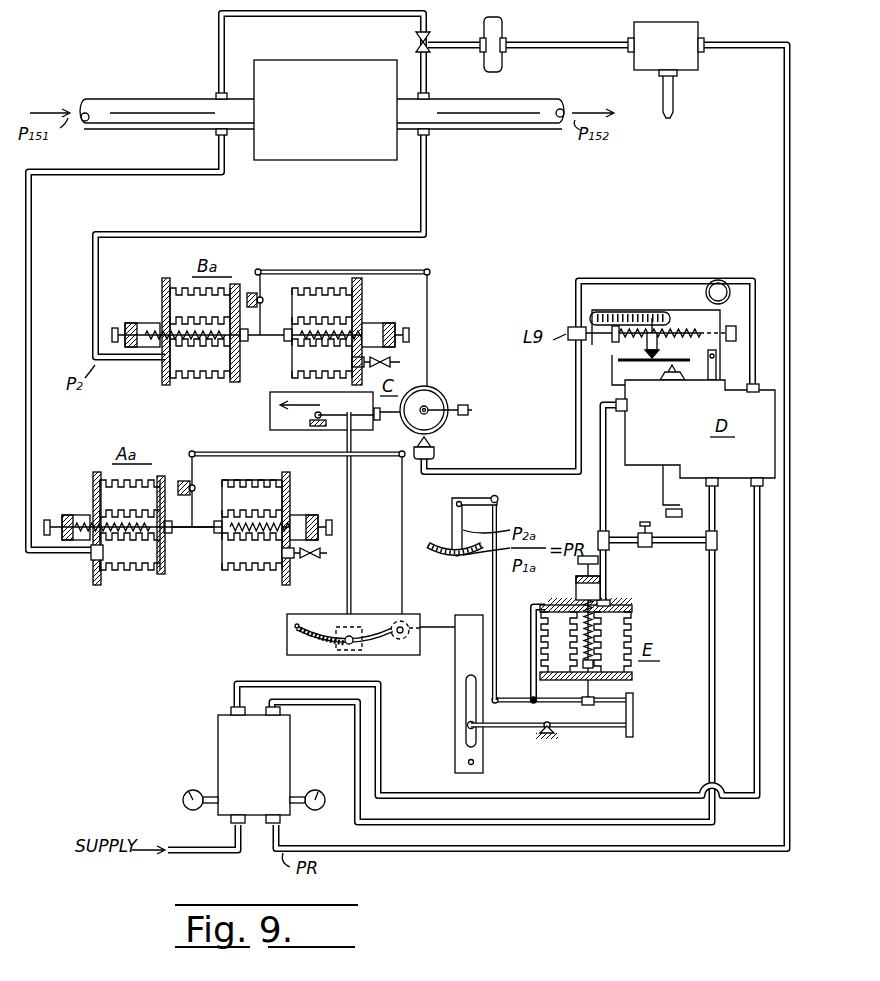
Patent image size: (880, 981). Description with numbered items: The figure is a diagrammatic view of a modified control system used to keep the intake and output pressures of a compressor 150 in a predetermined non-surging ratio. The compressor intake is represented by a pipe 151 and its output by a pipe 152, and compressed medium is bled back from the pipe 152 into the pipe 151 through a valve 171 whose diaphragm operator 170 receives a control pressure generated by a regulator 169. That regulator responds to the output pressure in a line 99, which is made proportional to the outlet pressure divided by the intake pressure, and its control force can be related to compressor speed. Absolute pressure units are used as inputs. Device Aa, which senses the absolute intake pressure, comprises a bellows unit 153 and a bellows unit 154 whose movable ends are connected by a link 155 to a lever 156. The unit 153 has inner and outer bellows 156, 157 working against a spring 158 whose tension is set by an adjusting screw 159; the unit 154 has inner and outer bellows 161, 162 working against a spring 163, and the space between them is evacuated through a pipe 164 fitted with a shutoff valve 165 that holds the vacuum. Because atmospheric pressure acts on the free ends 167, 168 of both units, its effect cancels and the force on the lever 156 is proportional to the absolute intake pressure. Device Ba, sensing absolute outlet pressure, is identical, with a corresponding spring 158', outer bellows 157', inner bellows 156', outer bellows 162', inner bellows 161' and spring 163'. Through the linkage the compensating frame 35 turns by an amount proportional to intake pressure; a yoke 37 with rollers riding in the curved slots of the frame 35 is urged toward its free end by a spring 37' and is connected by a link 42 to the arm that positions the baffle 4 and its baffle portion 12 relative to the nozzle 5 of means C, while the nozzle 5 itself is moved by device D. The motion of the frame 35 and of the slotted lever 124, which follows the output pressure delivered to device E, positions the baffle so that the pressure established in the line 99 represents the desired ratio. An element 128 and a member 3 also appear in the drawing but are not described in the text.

The compressor 150 is at (307, 135).
The intake pipe 151 is at (128, 130).
The output pipe 152 is at (468, 130).
The regulator 169 is at (650, 57).
The diaphragm operator 170 is at (504, 33).
The valve 171 is at (429, 39).
The line 99 is at (786, 207).
The spring 158' is at (146, 331).
The outer bellows 157' is at (191, 352).
The inner bellows 156' is at (221, 352).
The outer bellows 162' is at (327, 313).
The inner bellows 161' is at (348, 290).
The spring 163' is at (386, 315).
The link 42 is at (352, 492).
The baffle 4 is at (433, 392).
The baffle portion 12 is at (444, 396).
The nozzle 5 is at (436, 445).
The spring 158 is at (78, 514).
The adjusting screw 159 is at (50, 518).
The bellows unit 153 is at (150, 582).
The outer bellows 157 is at (76, 578).
The free end 167 is at (165, 578).
The free end 168 is at (213, 560).
The link 155 is at (190, 486).
The lever 156 is at (216, 516).
The bellows unit 154 is at (270, 580).
The outer bellows 162 is at (277, 470).
The inner bellows 161 is at (282, 505).
The spring 163 is at (339, 519).
The pipe 164 is at (318, 553).
The shutoff valve 165 is at (310, 560).
The compensating frame 35 is at (393, 656).
The spring 37' is at (336, 617).
The yoke 37 is at (372, 610).
The link 128 is at (433, 624).
The slotted lever 124 is at (455, 713).
The pointer bracket 3 is at (452, 519).